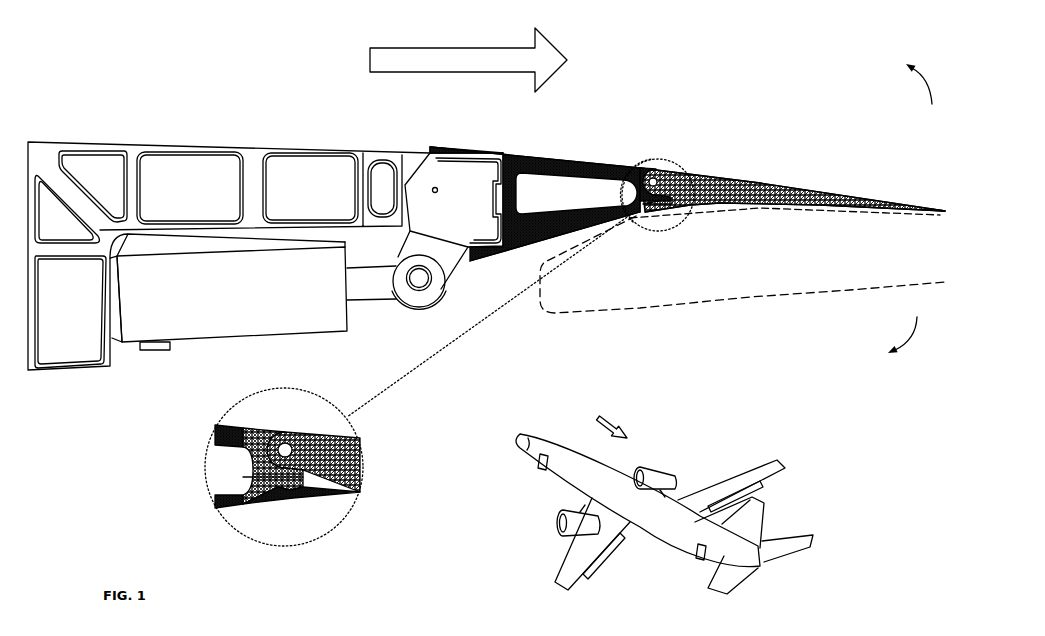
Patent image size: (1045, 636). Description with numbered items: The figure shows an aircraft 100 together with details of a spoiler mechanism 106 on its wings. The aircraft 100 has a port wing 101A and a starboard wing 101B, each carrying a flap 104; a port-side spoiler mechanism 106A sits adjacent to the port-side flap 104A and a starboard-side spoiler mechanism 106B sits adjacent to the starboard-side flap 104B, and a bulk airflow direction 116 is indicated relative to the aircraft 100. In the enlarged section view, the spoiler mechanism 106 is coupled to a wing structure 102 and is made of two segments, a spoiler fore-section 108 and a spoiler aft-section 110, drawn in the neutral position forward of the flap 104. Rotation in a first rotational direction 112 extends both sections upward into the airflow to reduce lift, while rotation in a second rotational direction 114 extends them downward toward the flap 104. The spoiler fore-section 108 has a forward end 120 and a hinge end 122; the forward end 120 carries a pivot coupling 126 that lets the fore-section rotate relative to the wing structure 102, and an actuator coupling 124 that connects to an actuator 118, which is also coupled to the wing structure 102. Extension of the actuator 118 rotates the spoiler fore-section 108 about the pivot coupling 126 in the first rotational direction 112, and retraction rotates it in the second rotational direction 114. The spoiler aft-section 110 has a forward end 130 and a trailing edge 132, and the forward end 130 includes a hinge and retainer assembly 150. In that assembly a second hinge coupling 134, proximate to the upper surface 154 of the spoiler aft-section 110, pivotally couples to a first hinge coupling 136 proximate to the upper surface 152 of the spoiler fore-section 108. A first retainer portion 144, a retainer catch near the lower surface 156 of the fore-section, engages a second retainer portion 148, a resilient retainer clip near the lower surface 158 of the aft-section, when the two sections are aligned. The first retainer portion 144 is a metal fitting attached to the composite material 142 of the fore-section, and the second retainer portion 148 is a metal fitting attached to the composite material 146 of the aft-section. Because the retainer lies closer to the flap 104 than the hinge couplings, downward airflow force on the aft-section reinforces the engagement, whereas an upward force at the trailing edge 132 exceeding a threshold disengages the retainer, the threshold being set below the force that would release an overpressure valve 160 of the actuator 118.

The aircraft 100 is at (631, 517).
The port wing 101A is at (576, 549).
The starboard wing 101B is at (729, 478).
The wing structure 102 is at (432, 140).
The flap 104 is at (760, 295).
The port-side flap 104A is at (592, 568).
The starboard-side flap 104B is at (770, 480).
The spoiler mechanism 106 is at (637, 96).
The port-side spoiler mechanism 106A is at (587, 546).
The starboard-side spoiler mechanism 106B is at (674, 477).
The spoiler fore-section 108 is at (426, 258).
The spoiler aft-section 110 is at (656, 271).
The first rotational direction 112 is at (872, 71).
The second rotational direction 114 is at (875, 358).
The bulk airflow direction 116 is at (370, 63).
The actuator 118 is at (229, 337).
The forward end 120 is at (405, 232).
The hinge end 122 is at (632, 225).
The actuator coupling 124 is at (424, 299).
The pivot coupling 126 is at (436, 188).
The forward end 130 is at (663, 226).
The trailing edge 132 is at (912, 229).
The second hinge coupling 134 is at (292, 443).
The first hinge coupling 136 is at (268, 426).
The composite material 142 is at (228, 507).
The first retainer portion 144 is at (243, 478).
The composite material 146 is at (347, 460).
The second retainer portion 148 is at (293, 504).
The hinge and retainer assembly 150 is at (473, 279).
The upper surface 152 is at (572, 155).
The upper surface 154 is at (762, 181).
The lower surface 156 is at (533, 247).
The lower surface 158 is at (763, 207).
The overpressure valve 160 is at (163, 352).